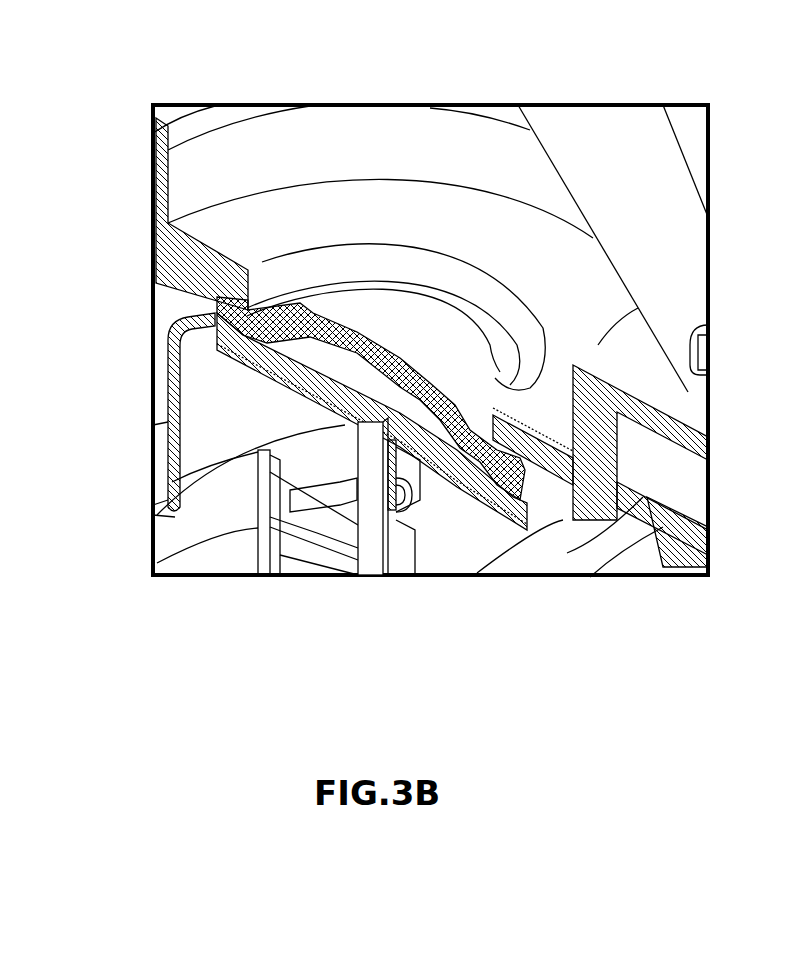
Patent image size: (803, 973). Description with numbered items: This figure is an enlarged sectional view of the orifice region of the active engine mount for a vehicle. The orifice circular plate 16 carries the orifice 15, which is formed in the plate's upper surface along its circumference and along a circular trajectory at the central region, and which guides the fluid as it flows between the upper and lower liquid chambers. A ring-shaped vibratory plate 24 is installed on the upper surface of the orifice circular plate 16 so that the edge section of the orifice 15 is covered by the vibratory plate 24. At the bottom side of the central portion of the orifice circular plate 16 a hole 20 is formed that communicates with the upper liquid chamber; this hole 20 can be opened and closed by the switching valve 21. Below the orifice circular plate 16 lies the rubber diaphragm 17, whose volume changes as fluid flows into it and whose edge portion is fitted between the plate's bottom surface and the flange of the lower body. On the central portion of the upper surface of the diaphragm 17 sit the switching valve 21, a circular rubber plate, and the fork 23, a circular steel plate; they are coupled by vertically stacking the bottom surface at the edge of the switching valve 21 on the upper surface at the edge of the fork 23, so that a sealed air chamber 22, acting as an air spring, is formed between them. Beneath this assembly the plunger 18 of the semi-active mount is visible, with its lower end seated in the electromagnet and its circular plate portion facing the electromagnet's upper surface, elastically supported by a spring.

The orifice 15 is at (683, 498).
The orifice circular plate 16 is at (576, 530).
The diaphragm 17 is at (185, 270).
The plunger 18 is at (330, 513).
The hole 20 is at (455, 440).
The switching valve 21 is at (178, 470).
The sealed air chamber 22 is at (340, 372).
The fork 23 is at (420, 500).
The vibratory plate 24 is at (615, 523).